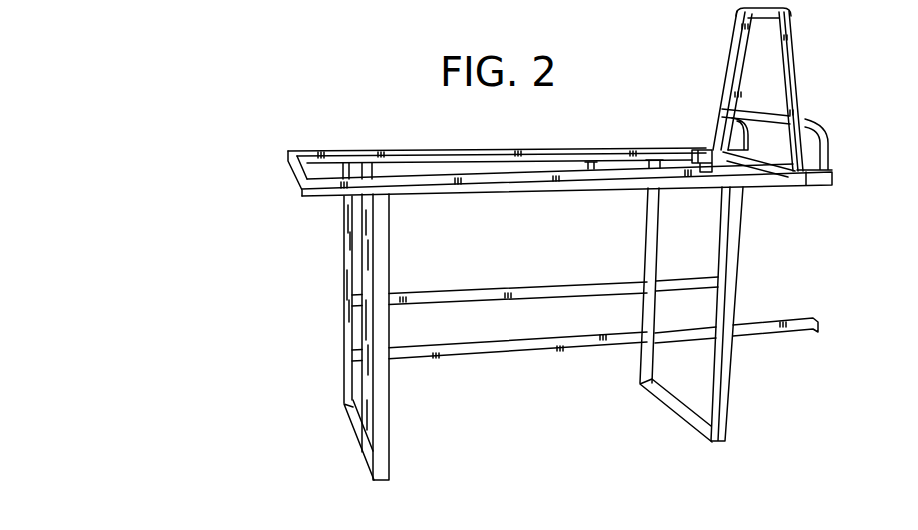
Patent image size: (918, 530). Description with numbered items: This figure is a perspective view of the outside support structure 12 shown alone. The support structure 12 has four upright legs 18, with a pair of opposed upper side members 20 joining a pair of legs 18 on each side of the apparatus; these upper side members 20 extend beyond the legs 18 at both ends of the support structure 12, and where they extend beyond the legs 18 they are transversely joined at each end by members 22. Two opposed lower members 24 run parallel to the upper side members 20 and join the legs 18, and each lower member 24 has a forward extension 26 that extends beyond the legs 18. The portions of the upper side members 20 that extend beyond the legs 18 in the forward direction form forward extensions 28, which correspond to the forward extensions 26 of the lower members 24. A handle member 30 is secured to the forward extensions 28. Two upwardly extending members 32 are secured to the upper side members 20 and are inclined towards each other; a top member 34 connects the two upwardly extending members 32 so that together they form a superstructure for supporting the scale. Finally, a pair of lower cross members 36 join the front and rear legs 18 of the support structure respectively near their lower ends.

The support structure 12 is at (278, 209).
The upright legs 18 is at (347, 237).
The upper side members 20 is at (556, 152).
The transverse members 22 is at (292, 174).
The lower members 24 is at (450, 298).
The forward extension 26 is at (688, 282).
The forward extensions 28 is at (693, 153).
The handle member 30 is at (832, 152).
The upwardly extending members 32 is at (728, 81).
The top member 34 is at (764, 11).
The lower cross members 36 is at (362, 444).